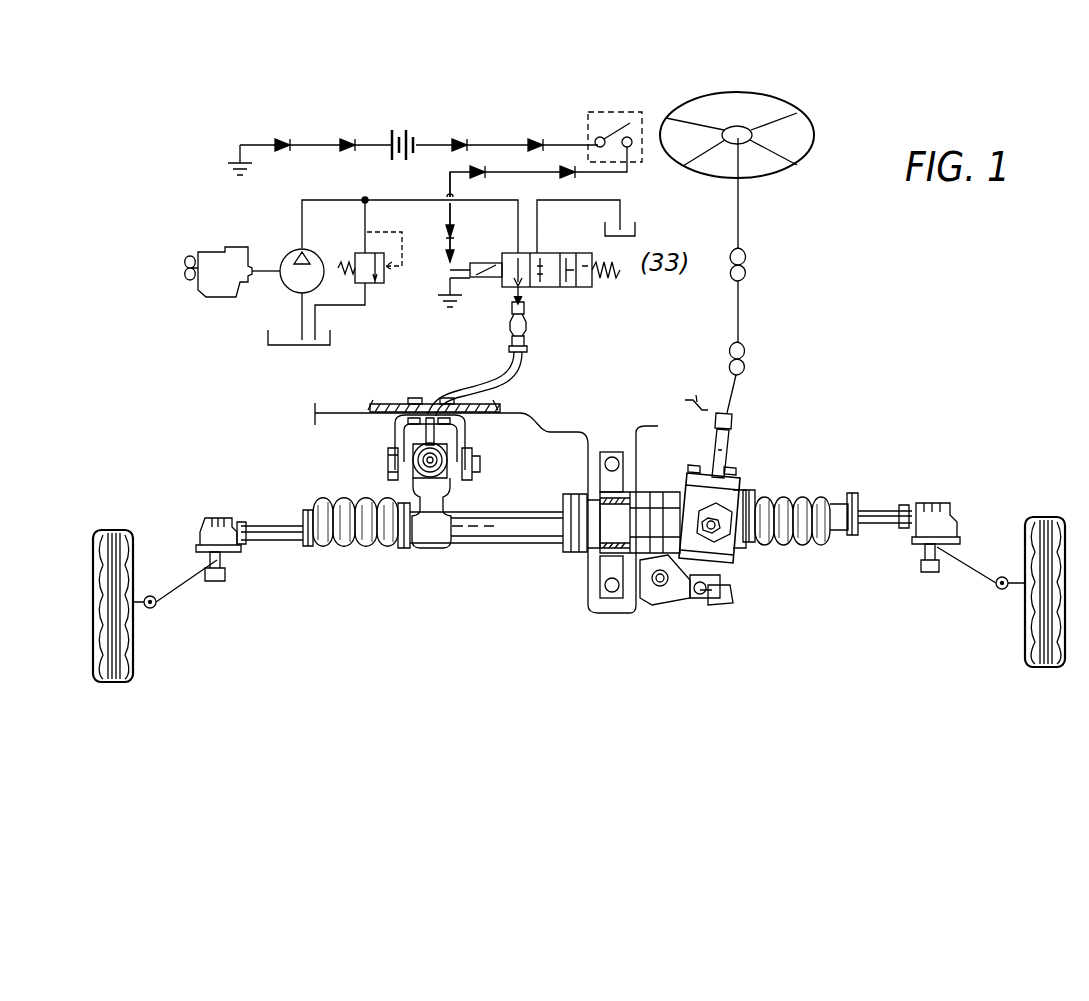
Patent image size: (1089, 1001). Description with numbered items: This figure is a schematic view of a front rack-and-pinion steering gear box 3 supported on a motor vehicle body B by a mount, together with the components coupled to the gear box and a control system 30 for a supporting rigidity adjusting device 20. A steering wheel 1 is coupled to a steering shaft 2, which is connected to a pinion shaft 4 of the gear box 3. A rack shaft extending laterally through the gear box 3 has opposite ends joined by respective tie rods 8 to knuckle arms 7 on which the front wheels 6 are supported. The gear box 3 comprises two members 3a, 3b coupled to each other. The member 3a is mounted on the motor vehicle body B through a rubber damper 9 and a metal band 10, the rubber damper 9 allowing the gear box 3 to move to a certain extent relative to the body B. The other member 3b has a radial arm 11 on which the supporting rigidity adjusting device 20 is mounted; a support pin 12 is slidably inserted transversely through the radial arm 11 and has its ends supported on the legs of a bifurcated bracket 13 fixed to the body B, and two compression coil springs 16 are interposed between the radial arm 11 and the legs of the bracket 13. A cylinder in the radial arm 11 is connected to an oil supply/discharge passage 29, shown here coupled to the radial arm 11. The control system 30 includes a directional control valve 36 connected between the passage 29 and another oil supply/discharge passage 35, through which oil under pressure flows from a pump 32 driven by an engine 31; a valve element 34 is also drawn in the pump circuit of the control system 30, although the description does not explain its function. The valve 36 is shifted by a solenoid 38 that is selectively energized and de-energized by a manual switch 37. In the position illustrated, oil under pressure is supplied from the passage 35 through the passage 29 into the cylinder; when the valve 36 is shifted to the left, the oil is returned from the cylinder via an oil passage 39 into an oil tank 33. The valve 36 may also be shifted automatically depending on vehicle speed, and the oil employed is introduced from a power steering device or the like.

The steering wheel 1 is at (788, 98).
The steering shaft 2 is at (743, 218).
The rack-and-pinion steering gear box 3 is at (472, 545).
The member 3a is at (665, 565).
The member 3b is at (513, 540).
The pinion shaft 4 is at (730, 457).
The front wheels 6 is at (100, 686).
The knuckle arms 7 is at (190, 585).
The tie rods 8 is at (270, 540).
The rubber damper 9 is at (640, 494).
The metal band 10 is at (620, 450).
The radial arm 11 is at (445, 500).
The support pin 12 is at (480, 478).
The bifurcated bracket 13 is at (395, 434).
The compression coil springs 16 is at (398, 465).
The supporting rigidity adjusting device 20 is at (402, 405).
The oil supply/discharge passage 29 is at (458, 382).
The control system 30 is at (370, 122).
The engine 31 is at (222, 258).
The pump 32 is at (286, 252).
The oil tank 33 is at (292, 345).
The relief valve 34 is at (380, 284).
The oil supply/discharge passage 35 is at (440, 205).
The directional control valve 36 is at (563, 287).
The manual switch 37 is at (608, 112).
The solenoid 38 is at (482, 262).
The oil passage 39 is at (567, 200).
The motor vehicle body B is at (566, 414).